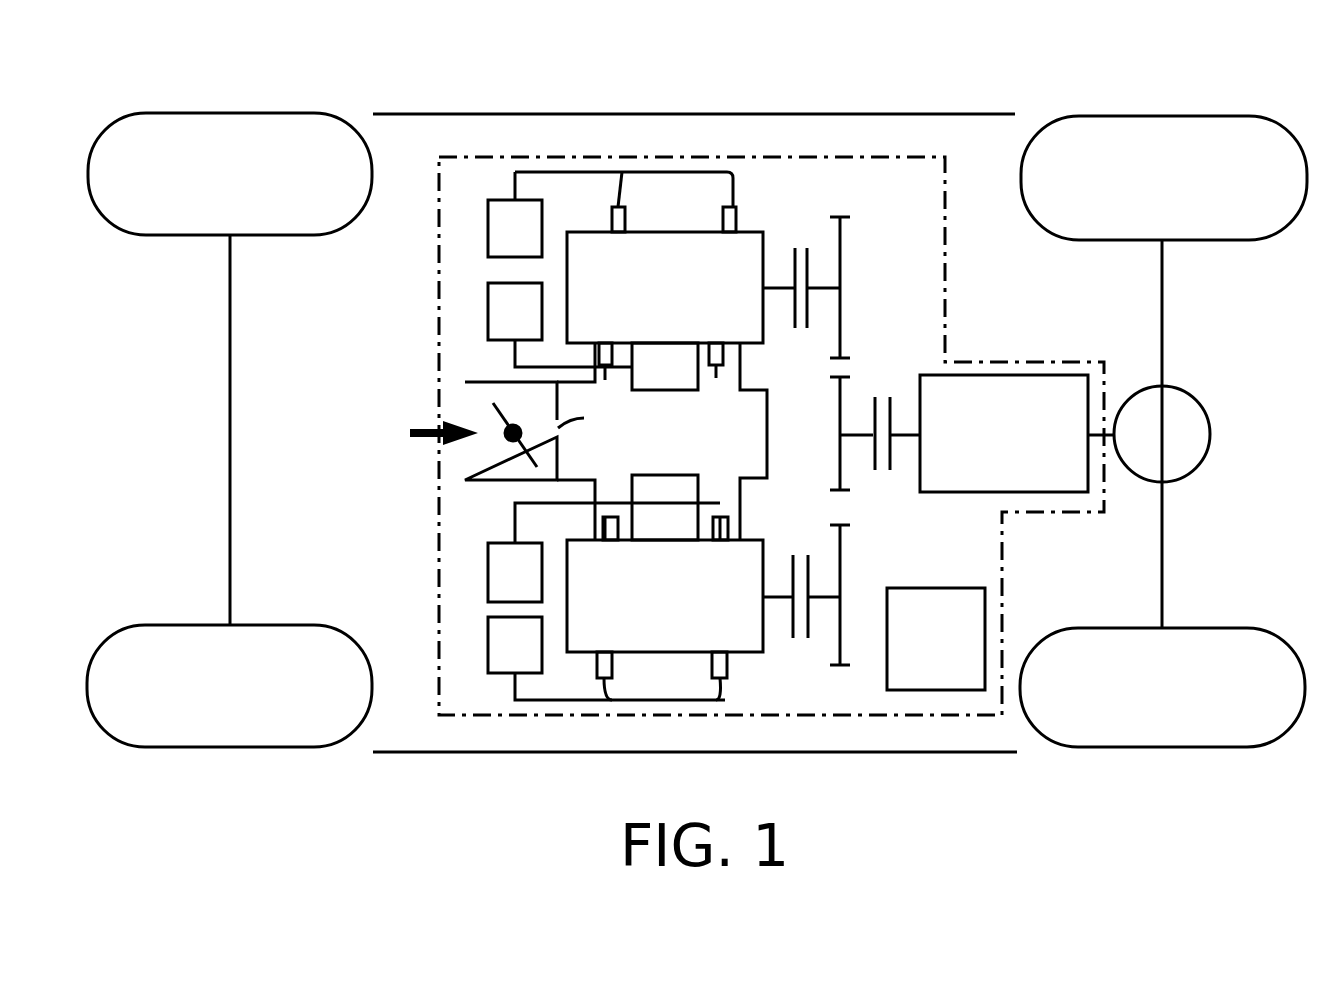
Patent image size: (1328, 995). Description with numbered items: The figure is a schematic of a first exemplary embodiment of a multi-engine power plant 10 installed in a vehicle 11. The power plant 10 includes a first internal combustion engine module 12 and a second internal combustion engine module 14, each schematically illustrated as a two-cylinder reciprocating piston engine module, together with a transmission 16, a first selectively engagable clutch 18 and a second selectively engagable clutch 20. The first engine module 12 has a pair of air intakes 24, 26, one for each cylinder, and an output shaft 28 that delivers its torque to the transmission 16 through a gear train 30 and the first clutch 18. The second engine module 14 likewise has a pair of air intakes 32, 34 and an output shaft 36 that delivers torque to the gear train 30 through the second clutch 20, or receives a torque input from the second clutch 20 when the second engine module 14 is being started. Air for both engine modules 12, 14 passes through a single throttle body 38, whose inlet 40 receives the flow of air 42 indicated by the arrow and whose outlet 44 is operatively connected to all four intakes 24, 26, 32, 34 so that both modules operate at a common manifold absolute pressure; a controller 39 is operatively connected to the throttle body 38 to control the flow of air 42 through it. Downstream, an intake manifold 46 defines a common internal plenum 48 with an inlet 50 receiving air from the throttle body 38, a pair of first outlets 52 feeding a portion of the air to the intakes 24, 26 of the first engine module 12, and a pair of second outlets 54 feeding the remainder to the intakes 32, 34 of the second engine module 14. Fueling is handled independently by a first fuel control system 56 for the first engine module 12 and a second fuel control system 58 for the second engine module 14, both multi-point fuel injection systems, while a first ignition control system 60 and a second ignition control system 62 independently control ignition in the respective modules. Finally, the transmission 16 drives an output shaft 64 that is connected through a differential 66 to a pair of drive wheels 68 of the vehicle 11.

The multi-engine power plant 10 is at (924, 155).
The vehicle 11 is at (819, 108).
The first internal combustion engine module 12 is at (698, 618).
The second internal combustion engine module 14 is at (680, 293).
The transmission 16 is at (1027, 448).
The first selectively engagable clutch 18 is at (890, 392).
The second selectively engagable clutch 20 is at (798, 245).
The air intake 24 is at (603, 541).
The air intake 26 is at (713, 541).
The output shaft 28 is at (833, 598).
The gear train 30 is at (853, 533).
The air intake 32 is at (598, 342).
The air intake 34 is at (707, 343).
The output shaft 36 is at (775, 290).
The single throttle body 38 is at (495, 465).
The controller 39 is at (953, 655).
The inlet 40 is at (463, 462).
The flow of air 42 is at (427, 440).
The outlet 44 is at (538, 420).
The intake manifold 46 is at (767, 428).
The common internal plenum 48 is at (689, 442).
The inlet 50 is at (585, 419).
The first outlets 52 is at (632, 449).
The second outlets 54 is at (608, 383).
The first fuel control system 56 is at (537, 583).
The second fuel control system 58 is at (537, 327).
The first ignition control system 60 is at (537, 658).
The second ignition control system 62 is at (537, 242).
The output shaft 64 is at (1112, 432).
The differential 66 is at (1206, 410).
The drive wheels 68 is at (1246, 116).